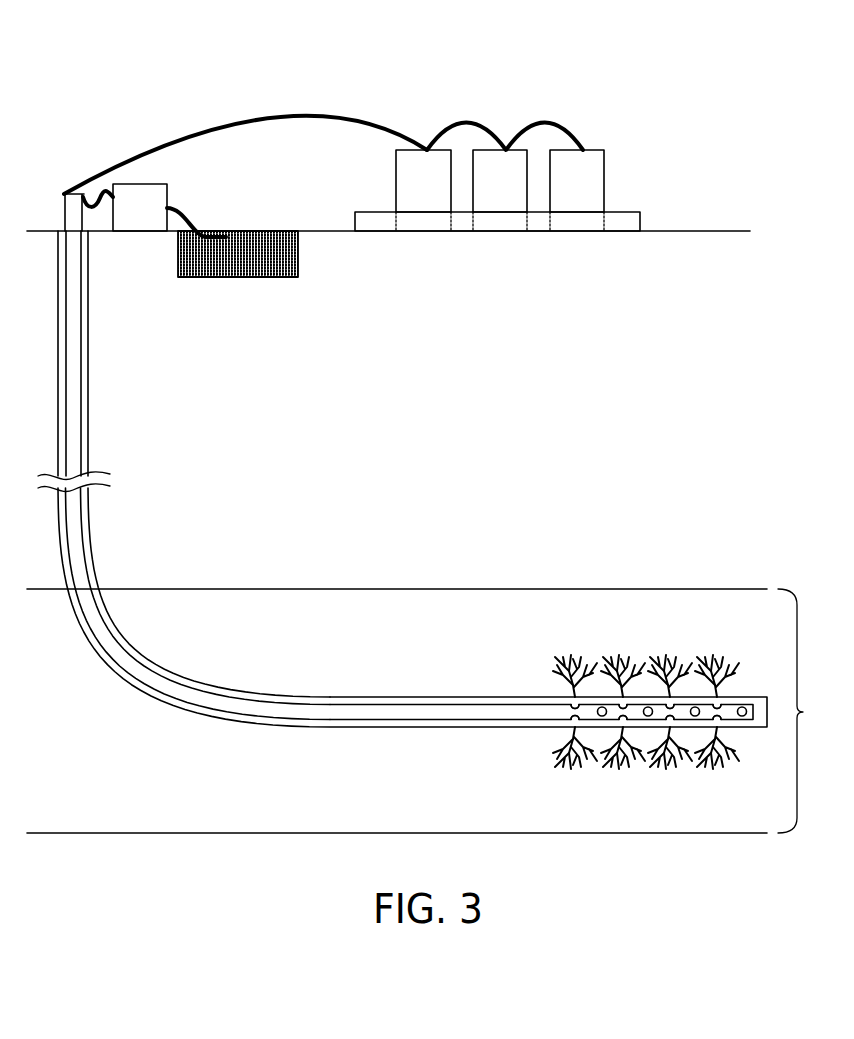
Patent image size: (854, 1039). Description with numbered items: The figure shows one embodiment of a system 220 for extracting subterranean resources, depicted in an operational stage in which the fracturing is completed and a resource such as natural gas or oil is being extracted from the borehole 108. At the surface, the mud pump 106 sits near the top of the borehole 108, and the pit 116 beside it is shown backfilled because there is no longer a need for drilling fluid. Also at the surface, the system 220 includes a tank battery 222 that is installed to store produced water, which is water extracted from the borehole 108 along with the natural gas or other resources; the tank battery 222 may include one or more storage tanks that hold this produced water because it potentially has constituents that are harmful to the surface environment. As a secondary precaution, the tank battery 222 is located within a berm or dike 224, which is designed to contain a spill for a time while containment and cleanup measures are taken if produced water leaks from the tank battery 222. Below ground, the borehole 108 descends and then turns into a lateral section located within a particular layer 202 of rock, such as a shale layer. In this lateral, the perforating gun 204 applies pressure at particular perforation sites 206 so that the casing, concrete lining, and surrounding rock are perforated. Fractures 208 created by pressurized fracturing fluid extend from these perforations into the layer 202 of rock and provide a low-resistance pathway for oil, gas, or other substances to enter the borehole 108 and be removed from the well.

The system for extracting subterranean resources 220 is at (140, 55).
The mud pump 106 is at (167, 197).
The pit 116 is at (299, 257).
The borehole 108 is at (117, 676).
The tank battery 222 is at (612, 112).
The berm or dike 224 is at (640, 218).
The layer of rock 202 is at (434, 711).
The perforating gun 204 is at (752, 704).
The perforation sites 206 is at (719, 722).
The fractures 208 is at (560, 660).